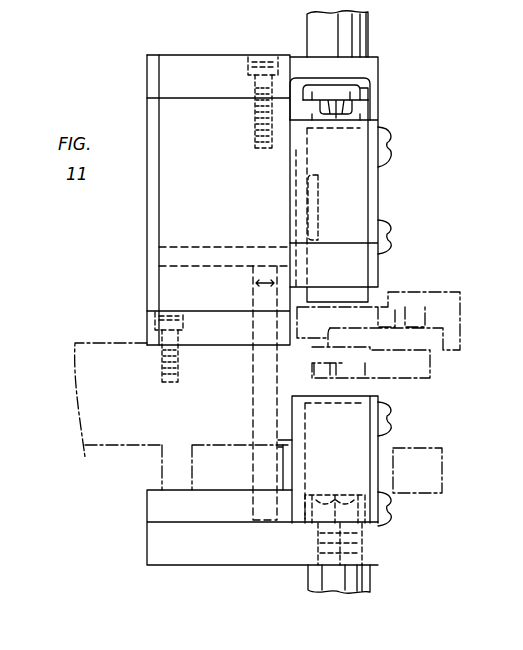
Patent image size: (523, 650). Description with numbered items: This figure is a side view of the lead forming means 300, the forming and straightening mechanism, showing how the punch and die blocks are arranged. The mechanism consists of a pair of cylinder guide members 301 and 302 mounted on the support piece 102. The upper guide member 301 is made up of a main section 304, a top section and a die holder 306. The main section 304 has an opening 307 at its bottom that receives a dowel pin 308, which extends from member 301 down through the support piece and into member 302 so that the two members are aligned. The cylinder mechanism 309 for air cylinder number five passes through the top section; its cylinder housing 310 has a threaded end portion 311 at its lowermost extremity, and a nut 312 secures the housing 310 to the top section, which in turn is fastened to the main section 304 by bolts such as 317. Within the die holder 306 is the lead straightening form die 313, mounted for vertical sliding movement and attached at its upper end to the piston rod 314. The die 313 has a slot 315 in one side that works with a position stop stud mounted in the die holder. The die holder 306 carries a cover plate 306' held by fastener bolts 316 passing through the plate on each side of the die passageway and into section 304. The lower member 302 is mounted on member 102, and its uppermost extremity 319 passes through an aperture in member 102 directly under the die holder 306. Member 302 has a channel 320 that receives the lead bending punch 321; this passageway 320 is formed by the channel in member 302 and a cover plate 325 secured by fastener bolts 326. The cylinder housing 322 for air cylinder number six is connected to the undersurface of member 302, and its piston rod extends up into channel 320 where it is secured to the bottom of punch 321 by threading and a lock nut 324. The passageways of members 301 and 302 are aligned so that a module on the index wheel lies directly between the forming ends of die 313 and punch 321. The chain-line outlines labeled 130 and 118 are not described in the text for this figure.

The cylinder guide member 301 is at (147, 124).
The main section 304 is at (147, 207).
The bolt 317 is at (244, 62).
The piston rod 314 is at (303, 78).
The nut 312 is at (372, 84).
The threaded end portion 311 is at (372, 110).
The cylinder mechanism 309 is at (368, 21).
The cylinder housing 310 is at (368, 44).
The lead forming means 300 is at (388, 101).
The cover plate 306' is at (415, 193).
The die holder 306 is at (329, 207).
The slot 315 is at (316, 200).
The lead straightening form die 313 is at (350, 226).
The fastener bolt 316 is at (390, 235).
The opening 307 is at (253, 298).
The dowel pin 308 is at (253, 372).
The support piece 102 is at (182, 416).
The bracket 130 is at (452, 288).
The bracket 118 is at (410, 381).
The uppermost extremity 319 is at (279, 430).
The lead bending punch 321 is at (335, 459).
The fastener bolt 326 is at (390, 427).
The cover plate 325 is at (380, 450).
The lock nut 324 is at (388, 521).
The channel 320 is at (304, 530).
The cylinder guide member 302 is at (147, 548).
The cylinder housing 322 is at (371, 581).